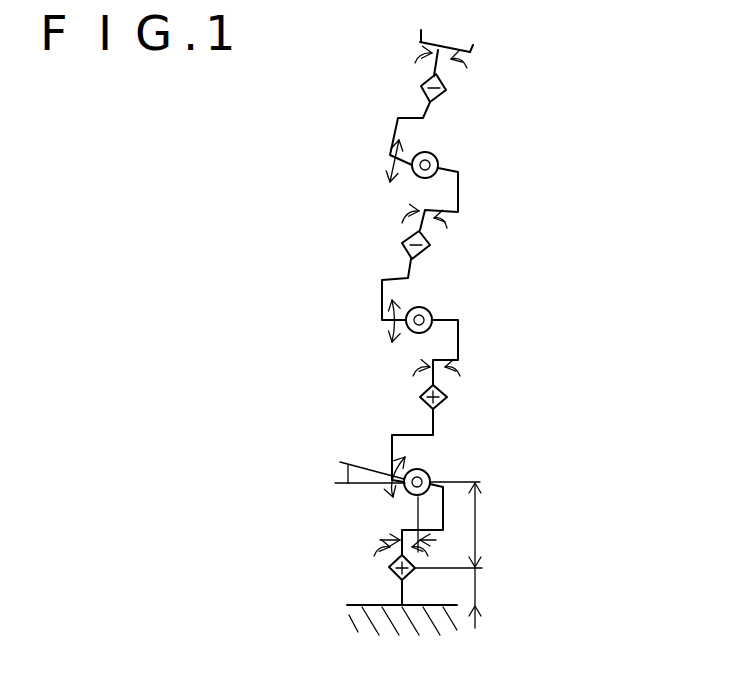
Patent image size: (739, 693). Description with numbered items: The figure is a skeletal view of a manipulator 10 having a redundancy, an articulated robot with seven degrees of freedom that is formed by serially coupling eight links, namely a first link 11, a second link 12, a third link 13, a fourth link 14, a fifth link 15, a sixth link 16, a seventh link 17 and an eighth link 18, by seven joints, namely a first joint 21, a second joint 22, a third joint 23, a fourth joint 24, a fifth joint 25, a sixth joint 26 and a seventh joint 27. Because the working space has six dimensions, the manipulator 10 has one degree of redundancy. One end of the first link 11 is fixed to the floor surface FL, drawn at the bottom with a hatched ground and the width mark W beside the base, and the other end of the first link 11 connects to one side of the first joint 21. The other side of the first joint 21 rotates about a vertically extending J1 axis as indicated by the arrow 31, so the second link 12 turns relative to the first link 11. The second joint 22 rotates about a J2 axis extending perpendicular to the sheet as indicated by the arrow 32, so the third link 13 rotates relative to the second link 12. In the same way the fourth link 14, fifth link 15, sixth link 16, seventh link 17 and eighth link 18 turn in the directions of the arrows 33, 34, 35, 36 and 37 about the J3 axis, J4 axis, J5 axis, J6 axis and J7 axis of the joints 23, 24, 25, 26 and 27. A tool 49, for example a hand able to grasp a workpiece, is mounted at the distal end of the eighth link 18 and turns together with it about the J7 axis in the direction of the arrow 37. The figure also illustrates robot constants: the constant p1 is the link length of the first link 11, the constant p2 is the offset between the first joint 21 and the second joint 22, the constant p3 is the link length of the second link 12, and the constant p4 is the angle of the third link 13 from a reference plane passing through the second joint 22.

The manipulator 10 is at (591, 228).
The first link 11 is at (400, 592).
The second link 12 is at (467, 482).
The third link 13 is at (437, 422).
The fourth link 14 is at (459, 338).
The fifth link 15 is at (410, 277).
The sixth link 16 is at (460, 200).
The seventh link 17 is at (424, 118).
The eighth link 18 is at (450, 72).
The first joint 21 is at (358, 567).
The second joint 22 is at (461, 460).
The third joint 23 is at (434, 401).
The fourth joint 24 is at (421, 334).
The fifth joint 25 is at (418, 248).
The sixth joint 26 is at (426, 172).
The seventh joint 27 is at (435, 94).
The arrow 31 is at (378, 551).
The arrow 32 is at (392, 464).
The arrow 33 is at (455, 373).
The arrow 34 is at (386, 322).
The arrow 35 is at (415, 225).
The arrow 36 is at (385, 148).
The arrow 37 is at (419, 55).
The tool 49 is at (430, 34).
The J1 axis J1 is at (388, 569).
The J2 axis J2 is at (433, 467).
The J3 axis J3 is at (420, 396).
The J4 axis J4 is at (431, 314).
The J5 axis J5 is at (402, 245).
The J6 axis J6 is at (438, 159).
The J7 axis J7 is at (420, 88).
The robot constant p1 is at (478, 583).
The robot constant p2 is at (398, 528).
The robot constant p3 is at (478, 522).
The robot constant p4 is at (347, 470).
The base width W is at (415, 589).
The floor surface FL is at (435, 603).